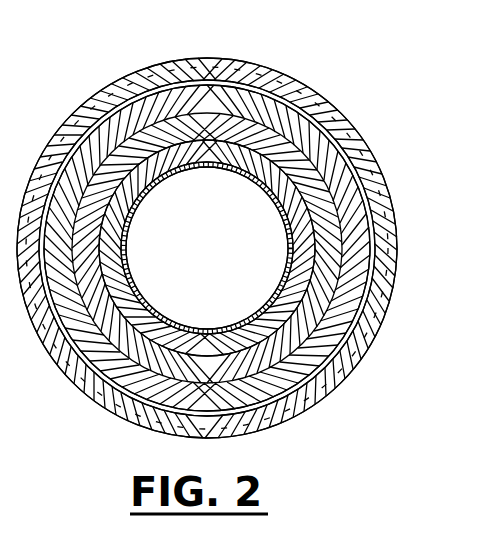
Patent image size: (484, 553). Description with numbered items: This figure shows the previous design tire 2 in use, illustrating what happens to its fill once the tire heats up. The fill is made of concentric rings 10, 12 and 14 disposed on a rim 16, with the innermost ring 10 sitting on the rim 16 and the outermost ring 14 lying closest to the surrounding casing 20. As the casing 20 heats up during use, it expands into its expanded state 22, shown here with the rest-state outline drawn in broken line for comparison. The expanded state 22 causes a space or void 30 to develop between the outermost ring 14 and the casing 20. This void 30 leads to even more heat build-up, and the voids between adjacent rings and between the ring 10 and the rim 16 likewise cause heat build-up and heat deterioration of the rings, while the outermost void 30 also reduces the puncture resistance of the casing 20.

The tire 2 is at (348, 107).
The innermost concentric ring 10 is at (130, 239).
The middle concentric ring 12 is at (142, 200).
The outermost ring 14 is at (278, 113).
The rim 16 is at (136, 282).
The casing 20 is at (150, 76).
The expanded state 22 is at (86, 108).
The void 30 is at (187, 68).